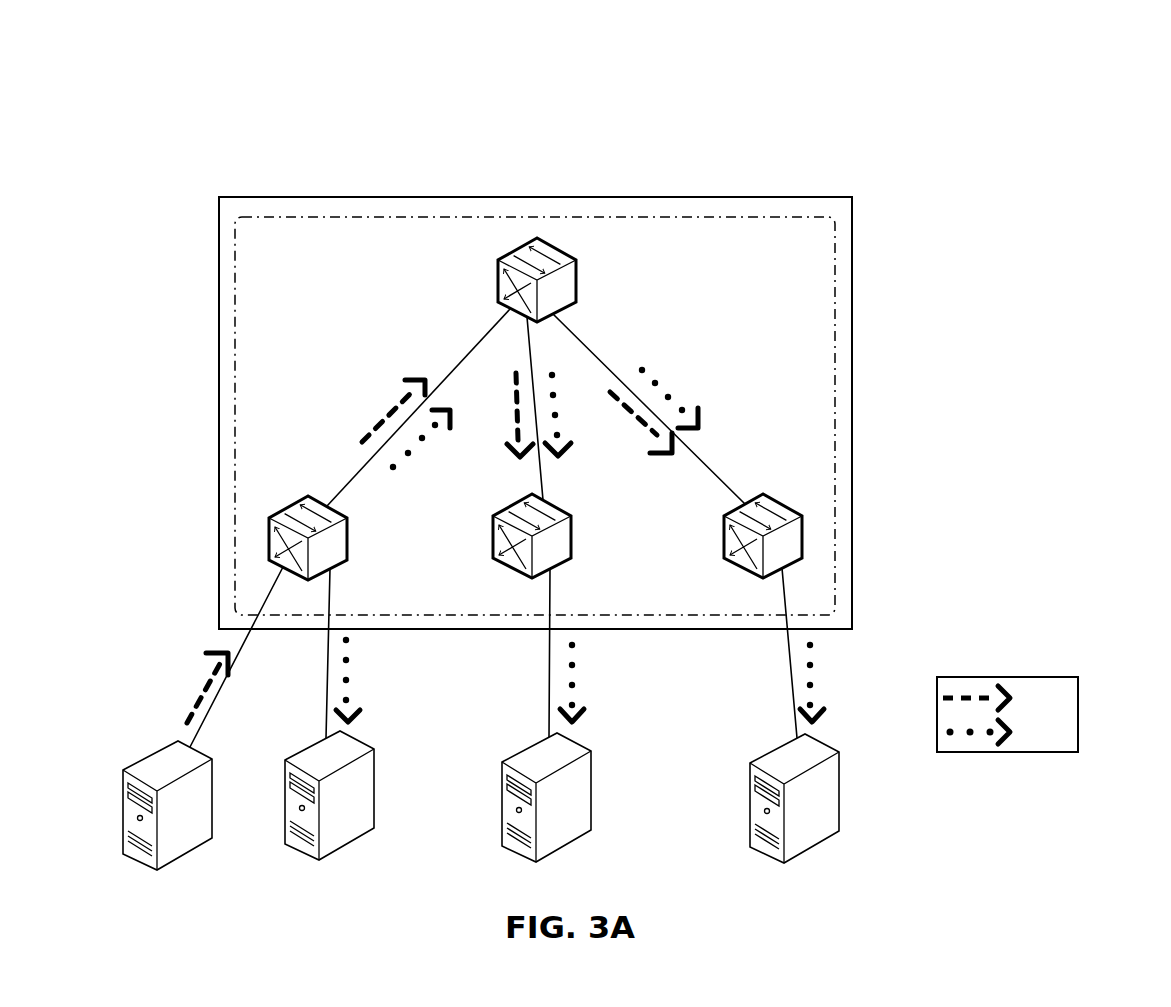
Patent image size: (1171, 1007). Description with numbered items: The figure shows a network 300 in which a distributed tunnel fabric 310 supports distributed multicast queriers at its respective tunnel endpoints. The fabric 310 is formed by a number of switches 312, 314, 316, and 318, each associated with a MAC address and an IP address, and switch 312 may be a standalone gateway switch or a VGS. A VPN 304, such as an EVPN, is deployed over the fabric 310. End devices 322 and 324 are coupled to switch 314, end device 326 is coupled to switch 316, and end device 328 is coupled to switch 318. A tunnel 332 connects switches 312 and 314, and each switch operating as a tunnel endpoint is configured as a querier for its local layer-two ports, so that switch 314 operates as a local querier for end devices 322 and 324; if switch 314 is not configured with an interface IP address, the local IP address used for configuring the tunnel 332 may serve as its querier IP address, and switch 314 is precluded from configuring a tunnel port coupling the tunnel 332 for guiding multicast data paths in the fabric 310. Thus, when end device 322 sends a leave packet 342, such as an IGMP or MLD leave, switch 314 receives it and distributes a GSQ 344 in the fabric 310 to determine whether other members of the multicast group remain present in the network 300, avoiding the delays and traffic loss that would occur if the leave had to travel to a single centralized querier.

The network 300 is at (1041, 146).
The VPN 304 is at (835, 472).
The distributed tunnel fabric 310 is at (548, 157).
The switch 312 is at (498, 277).
The switch 314 is at (350, 545).
The switch 316 is at (573, 543).
The switch 318 is at (797, 505).
The end device 322 is at (215, 802).
The end device 324 is at (283, 800).
The end device 326 is at (593, 792).
The end device 328 is at (843, 793).
The tunnel 332 is at (349, 483).
The leave packet 342 is at (202, 686).
The GSQ 344 is at (414, 458).